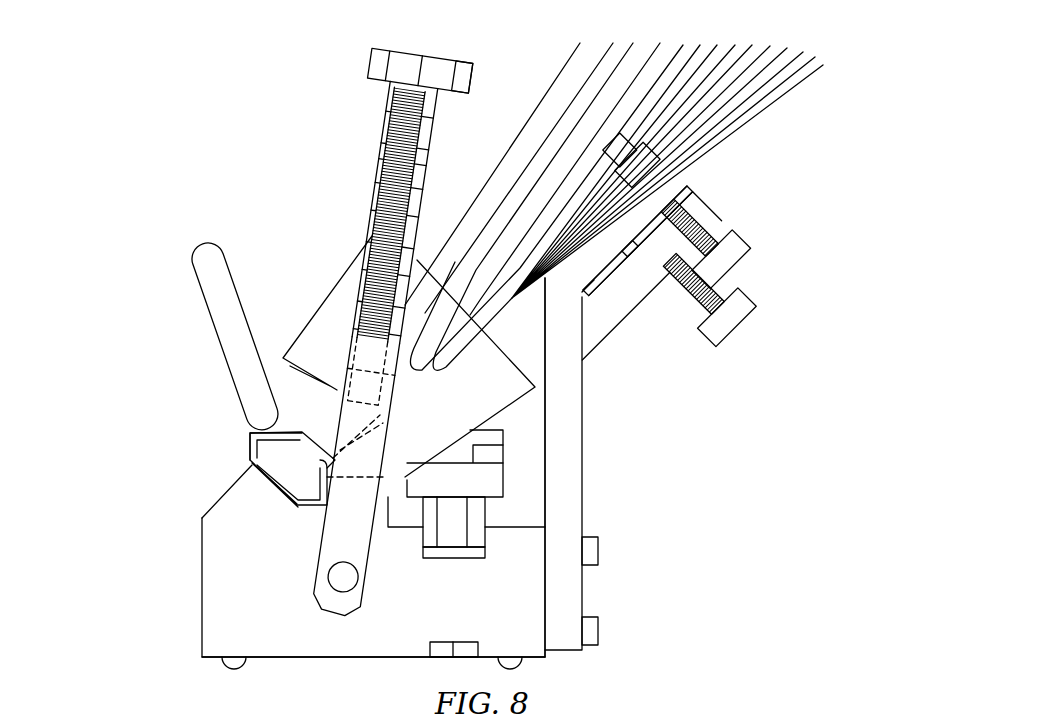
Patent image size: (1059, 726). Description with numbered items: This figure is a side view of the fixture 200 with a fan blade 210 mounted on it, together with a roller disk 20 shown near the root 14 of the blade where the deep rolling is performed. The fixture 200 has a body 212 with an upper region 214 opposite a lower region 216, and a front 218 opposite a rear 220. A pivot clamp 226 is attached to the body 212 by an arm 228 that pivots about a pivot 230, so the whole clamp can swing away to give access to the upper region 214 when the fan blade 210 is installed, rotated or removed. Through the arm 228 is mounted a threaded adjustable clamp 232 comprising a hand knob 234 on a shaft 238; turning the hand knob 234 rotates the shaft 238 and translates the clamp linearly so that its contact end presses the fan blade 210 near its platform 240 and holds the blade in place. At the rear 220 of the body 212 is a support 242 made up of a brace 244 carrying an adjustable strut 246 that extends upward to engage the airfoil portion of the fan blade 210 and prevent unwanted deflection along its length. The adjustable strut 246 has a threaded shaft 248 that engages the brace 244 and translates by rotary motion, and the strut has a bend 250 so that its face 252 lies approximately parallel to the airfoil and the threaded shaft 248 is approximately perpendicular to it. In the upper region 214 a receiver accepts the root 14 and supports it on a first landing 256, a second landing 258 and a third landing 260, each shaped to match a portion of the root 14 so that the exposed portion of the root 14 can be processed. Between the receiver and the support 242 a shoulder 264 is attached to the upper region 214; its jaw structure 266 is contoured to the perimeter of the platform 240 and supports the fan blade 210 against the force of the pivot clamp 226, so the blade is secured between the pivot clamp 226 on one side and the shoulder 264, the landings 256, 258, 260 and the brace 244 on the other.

The fixture 200 is at (153, 190).
The roller disk 20 is at (212, 292).
The root 14 is at (305, 478).
The fan blade 210 is at (652, 62).
The body 212 is at (262, 554).
The upper region 214 is at (220, 440).
The lower region 216 is at (312, 668).
The front 218 is at (168, 578).
The rear 220 is at (645, 577).
The pivot clamp 226 is at (360, 125).
The arm 228 is at (400, 417).
The pivot 230 is at (345, 578).
The adjustable clamp 232 is at (382, 38).
The hand knob 234 is at (465, 70).
The shaft 238 is at (370, 224).
The platform 240 is at (310, 312).
The support 242 is at (772, 348).
The brace 244 is at (583, 436).
The adjustable strut 246 is at (708, 204).
The threaded shaft 248 is at (690, 292).
The bend 250 is at (567, 287).
The face 252 is at (603, 217).
The first landing 256 is at (327, 493).
The second landing 258 is at (327, 507).
The third landing 260 is at (262, 492).
The shoulder 264 is at (520, 462).
The jaw structure 266 is at (445, 483).